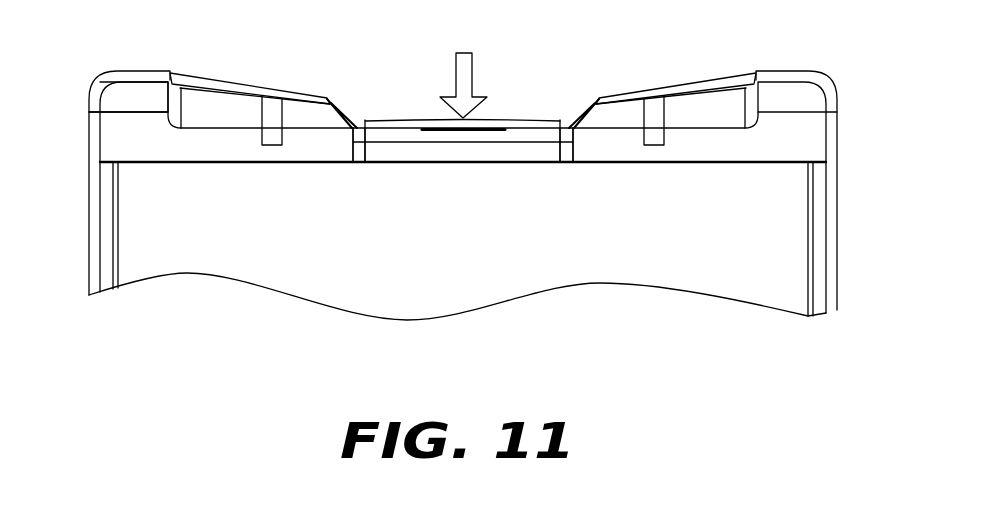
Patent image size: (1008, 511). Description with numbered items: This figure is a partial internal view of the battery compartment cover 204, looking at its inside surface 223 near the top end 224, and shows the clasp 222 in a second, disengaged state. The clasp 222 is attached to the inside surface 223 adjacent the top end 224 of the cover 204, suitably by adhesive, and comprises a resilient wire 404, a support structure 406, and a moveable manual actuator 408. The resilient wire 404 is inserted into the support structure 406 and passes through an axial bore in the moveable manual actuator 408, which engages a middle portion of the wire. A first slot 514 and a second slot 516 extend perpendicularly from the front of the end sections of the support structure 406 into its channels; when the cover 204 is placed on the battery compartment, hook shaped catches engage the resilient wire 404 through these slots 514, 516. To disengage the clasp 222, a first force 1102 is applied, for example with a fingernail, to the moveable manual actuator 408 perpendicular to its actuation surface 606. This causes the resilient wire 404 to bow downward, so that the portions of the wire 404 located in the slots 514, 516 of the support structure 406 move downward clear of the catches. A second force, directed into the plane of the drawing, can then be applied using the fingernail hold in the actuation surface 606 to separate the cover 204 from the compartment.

The battery compartment cover 204 is at (795, 268).
The clasp 222 is at (720, 103).
The inside surface 223 is at (205, 245).
The top end 224 is at (197, 78).
The resilient wire 404 is at (357, 134).
The support structure 406 is at (145, 90).
The moveable manual actuator 408 is at (513, 153).
The first slot 514 is at (656, 110).
The second slot 516 is at (272, 110).
The actuation surface 606 is at (428, 117).
The first force 1102 is at (493, 42).